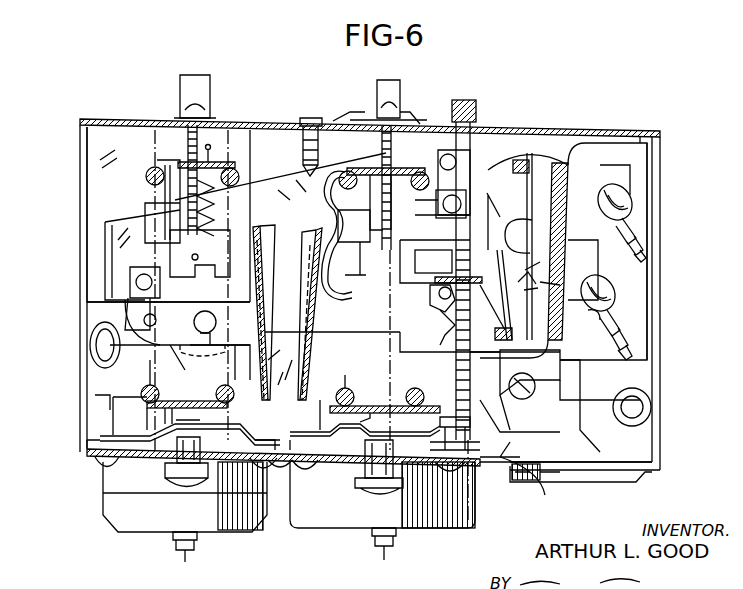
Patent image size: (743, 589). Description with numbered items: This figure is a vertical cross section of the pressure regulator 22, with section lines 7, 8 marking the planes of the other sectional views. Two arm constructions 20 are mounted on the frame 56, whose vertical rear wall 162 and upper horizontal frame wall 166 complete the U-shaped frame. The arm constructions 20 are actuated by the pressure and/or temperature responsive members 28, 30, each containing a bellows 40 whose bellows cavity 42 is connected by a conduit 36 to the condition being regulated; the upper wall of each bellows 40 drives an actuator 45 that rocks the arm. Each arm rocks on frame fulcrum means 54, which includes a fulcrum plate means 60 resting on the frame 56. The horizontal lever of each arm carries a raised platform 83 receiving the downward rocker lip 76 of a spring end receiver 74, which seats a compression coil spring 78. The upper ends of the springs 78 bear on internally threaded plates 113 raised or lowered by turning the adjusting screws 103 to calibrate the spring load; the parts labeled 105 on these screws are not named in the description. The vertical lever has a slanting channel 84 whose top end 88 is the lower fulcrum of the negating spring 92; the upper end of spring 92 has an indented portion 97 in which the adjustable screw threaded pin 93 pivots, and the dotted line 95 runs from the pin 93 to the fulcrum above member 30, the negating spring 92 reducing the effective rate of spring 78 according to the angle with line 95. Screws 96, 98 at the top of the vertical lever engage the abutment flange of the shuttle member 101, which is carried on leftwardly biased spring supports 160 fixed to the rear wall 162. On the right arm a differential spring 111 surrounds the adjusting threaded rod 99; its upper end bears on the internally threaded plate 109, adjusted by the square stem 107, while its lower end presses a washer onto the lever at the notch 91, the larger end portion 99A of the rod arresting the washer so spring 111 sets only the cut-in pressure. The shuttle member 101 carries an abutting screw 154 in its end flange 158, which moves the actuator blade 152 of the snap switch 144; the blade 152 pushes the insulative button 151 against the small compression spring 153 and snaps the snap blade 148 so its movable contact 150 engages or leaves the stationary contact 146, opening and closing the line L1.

The section line 7- 7 is at (87, 72).
The section line 8- 8 is at (462, 65).
The arm construction 20 is at (112, 374).
The pressure regulator 22 is at (556, 82).
The pressure and/or temperature responsive member 28 is at (130, 512).
The pressure and/or temperature responsive member 30 is at (315, 515).
The fluid pressure conducting conduit 36 is at (285, 558).
The bellows member 40 is at (188, 465).
The bellows cavity 42 is at (195, 490).
The actuator 45 is at (170, 460).
The frame fulcrum means 54 is at (320, 392).
The frame 56 is at (87, 443).
The fulcrum plate means 60 is at (430, 296).
The spring end receiver 74 is at (135, 395).
The rocker lip 76 is at (175, 424).
The compression coil spring 78 is at (405, 395).
The raised platform 83 is at (340, 450).
The slanting vertical channel 84 is at (290, 345).
The top end of channel 88 is at (334, 125).
The notch 91 is at (470, 435).
The negating spring 92 is at (303, 148).
The screw threaded pin 93 is at (303, 118).
The dotted line 95 is at (296, 180).
The screw 96 is at (336, 226).
The indented portion 97 is at (325, 182).
The screw 98 is at (278, 190).
The adjusting threaded rod 99 is at (500, 400).
The larger diameter end portion 99A is at (545, 500).
The shuttle member 101 is at (127, 228).
The adjusting screw 103 is at (188, 145).
The screw head 105 is at (180, 84).
The square adjusting stem 107 is at (470, 100).
The internally threaded plate 109 is at (535, 395).
The differential compression coil spring 111 is at (581, 486).
The internally threaded plate 113 is at (225, 75).
The snap switch 144 is at (665, 210).
The stationary contact 146 is at (520, 155).
The snap blade 148 is at (595, 308).
The movable contact 150 is at (575, 165).
The insulative button 151 is at (557, 267).
The actuator blade 152 is at (490, 240).
The small compression spring 153 is at (490, 286).
The abutting screw 154 is at (527, 200).
The end flange 158 is at (487, 193).
The spring support 160 is at (445, 165).
The vertical rear wall 162 is at (135, 145).
The upper horizontal frame wall 166 is at (652, 134).
The line L' L1 is at (520, 170).